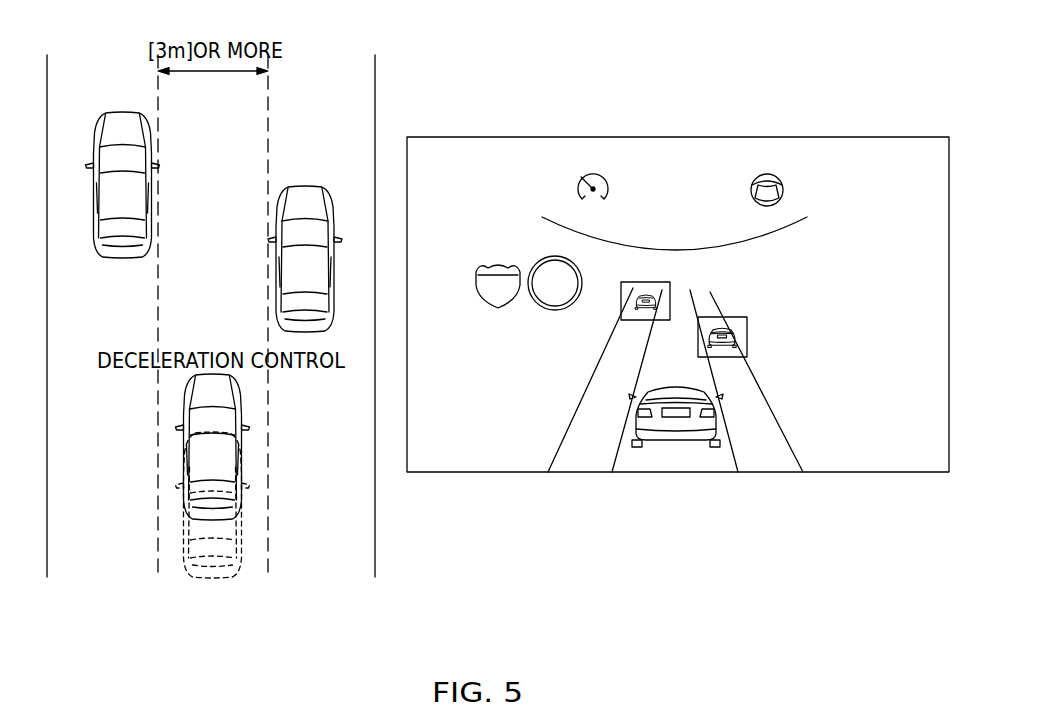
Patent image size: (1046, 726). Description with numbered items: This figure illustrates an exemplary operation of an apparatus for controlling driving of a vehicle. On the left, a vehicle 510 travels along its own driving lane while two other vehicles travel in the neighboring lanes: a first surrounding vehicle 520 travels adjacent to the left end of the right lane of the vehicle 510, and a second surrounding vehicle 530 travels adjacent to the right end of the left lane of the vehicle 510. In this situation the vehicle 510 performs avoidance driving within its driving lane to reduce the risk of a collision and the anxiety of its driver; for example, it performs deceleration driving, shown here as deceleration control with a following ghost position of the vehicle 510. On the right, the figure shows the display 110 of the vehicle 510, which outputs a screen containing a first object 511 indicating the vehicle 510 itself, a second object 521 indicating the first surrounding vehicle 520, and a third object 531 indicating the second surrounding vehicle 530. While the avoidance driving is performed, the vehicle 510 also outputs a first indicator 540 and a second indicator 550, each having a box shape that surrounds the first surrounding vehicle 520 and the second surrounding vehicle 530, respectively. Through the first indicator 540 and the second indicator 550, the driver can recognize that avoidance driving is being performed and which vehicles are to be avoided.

The display 110 is at (823, 137).
The vehicle 510 is at (240, 403).
The first object 511 is at (680, 437).
The first surrounding vehicle 520 is at (315, 198).
The second object 521 is at (735, 334).
The second surrounding vehicle 530 is at (107, 115).
The third object 531 is at (668, 293).
The first indicator 540 is at (747, 350).
The second indicator 550 is at (621, 308).